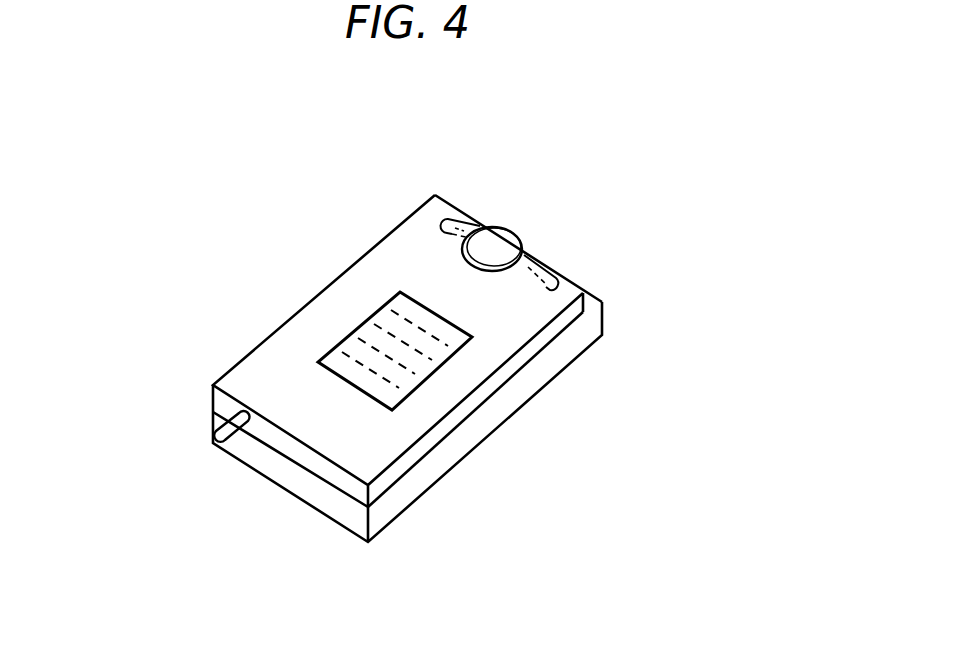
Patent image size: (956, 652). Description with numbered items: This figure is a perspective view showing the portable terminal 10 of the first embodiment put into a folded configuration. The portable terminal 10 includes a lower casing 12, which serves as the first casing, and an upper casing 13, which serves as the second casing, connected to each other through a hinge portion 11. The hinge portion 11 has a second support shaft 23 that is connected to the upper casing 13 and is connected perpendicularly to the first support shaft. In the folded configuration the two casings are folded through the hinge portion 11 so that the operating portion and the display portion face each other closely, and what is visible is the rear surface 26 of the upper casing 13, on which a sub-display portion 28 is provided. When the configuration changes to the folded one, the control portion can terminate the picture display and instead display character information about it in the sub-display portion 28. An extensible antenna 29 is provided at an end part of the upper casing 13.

The portable terminal 10 is at (667, 192).
The hinge portion 11 is at (517, 229).
The lower casing 12 is at (452, 470).
The upper casing 13 is at (332, 284).
The second support shaft 23 is at (467, 224).
The rear surface of the upper casing 26 is at (442, 397).
The sub-display portion 28 is at (447, 357).
The extensible antenna 29 is at (216, 426).